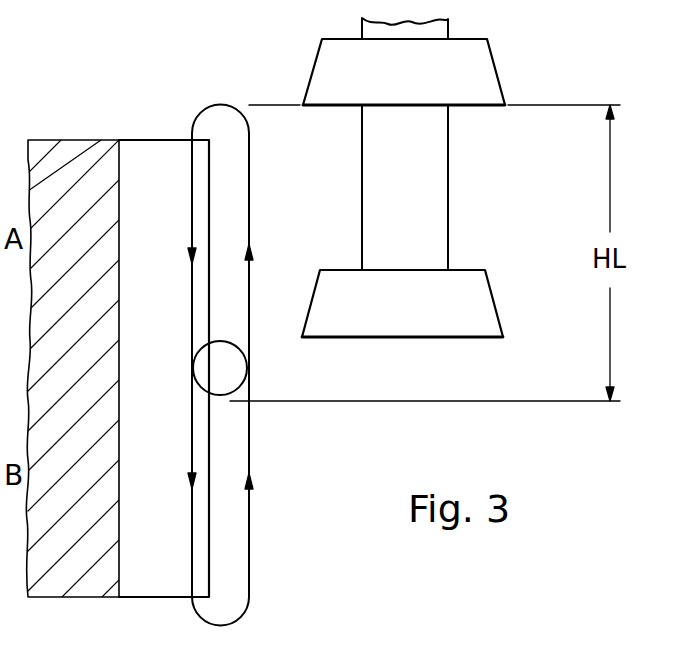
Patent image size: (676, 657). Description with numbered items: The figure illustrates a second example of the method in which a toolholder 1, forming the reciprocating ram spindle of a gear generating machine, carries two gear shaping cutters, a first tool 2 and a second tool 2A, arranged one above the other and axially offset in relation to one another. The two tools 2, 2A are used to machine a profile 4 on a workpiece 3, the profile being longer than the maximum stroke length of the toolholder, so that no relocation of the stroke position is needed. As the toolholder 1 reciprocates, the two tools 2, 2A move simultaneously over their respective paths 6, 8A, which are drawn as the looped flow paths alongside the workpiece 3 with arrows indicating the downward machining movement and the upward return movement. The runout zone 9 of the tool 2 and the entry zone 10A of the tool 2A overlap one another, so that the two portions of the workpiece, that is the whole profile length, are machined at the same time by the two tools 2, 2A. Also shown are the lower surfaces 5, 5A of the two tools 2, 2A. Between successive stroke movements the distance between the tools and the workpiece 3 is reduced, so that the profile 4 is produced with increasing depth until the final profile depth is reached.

The toolholder 1 is at (362, 24).
The tool 2 is at (475, 67).
The tool 2A is at (472, 281).
The workpiece 3 is at (75, 568).
The profile 4 is at (158, 575).
The lower surface of upper head 5 is at (303, 105).
The lower surface of lower head 5A is at (303, 340).
The path 6 is at (250, 182).
The path 8A is at (249, 530).
The runout zone 9 is at (218, 395).
The entry zone 10A is at (222, 341).